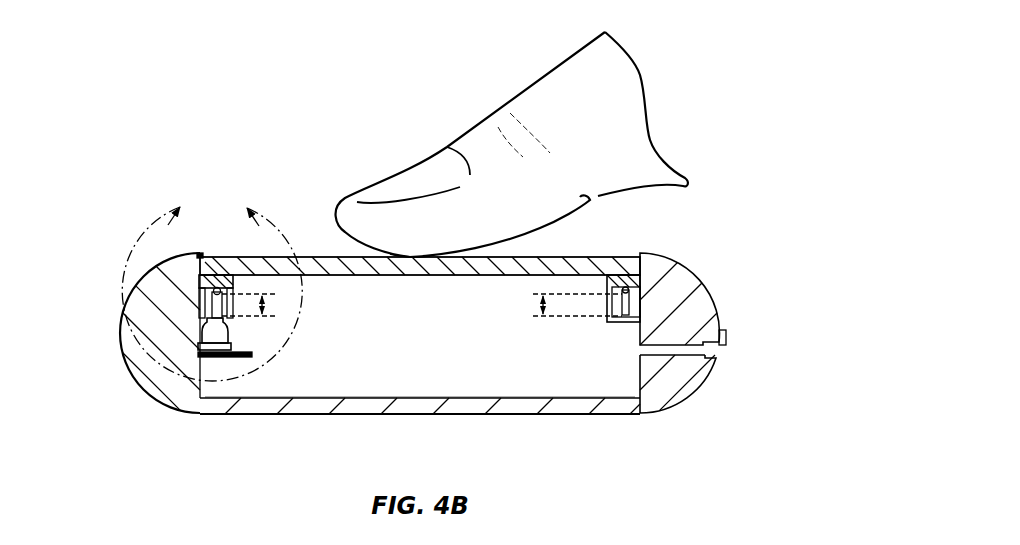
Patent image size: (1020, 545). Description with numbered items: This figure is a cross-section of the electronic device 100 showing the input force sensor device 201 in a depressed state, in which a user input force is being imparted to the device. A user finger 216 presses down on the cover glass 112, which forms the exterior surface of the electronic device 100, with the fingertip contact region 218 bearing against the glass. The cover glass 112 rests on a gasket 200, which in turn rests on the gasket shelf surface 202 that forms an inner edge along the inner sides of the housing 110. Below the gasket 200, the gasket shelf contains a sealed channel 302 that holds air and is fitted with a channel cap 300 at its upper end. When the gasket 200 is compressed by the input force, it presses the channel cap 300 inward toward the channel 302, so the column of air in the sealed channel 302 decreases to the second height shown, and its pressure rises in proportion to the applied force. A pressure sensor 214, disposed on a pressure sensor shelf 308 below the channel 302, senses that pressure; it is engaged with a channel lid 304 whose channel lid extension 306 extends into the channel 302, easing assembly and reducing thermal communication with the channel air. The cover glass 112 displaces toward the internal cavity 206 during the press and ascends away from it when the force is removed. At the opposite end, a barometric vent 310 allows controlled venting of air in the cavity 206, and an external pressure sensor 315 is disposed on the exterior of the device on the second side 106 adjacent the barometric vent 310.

The electronic device 100 is at (185, 145).
The second side 106 is at (719, 298).
The housing 110 is at (118, 333).
The cover glass 112 is at (313, 257).
The gasket 200 is at (199, 277).
The input force sensor device 201 is at (724, 280).
The gasket shelf surface 202 is at (219, 288).
The cavity 206 is at (470, 378).
The pressure sensor 214 is at (244, 348).
The user finger 216 is at (522, 93).
The fingertip contact 218 is at (418, 257).
The channel cap 300 is at (200, 280).
The sealed channel 302 is at (212, 290).
The channel lid 304 is at (229, 331).
The channel lid extension 306 is at (208, 320).
The pressure sensor shelf 308 is at (222, 357).
The barometric vent 310 is at (658, 357).
The external pressure sensor 315 is at (728, 337).